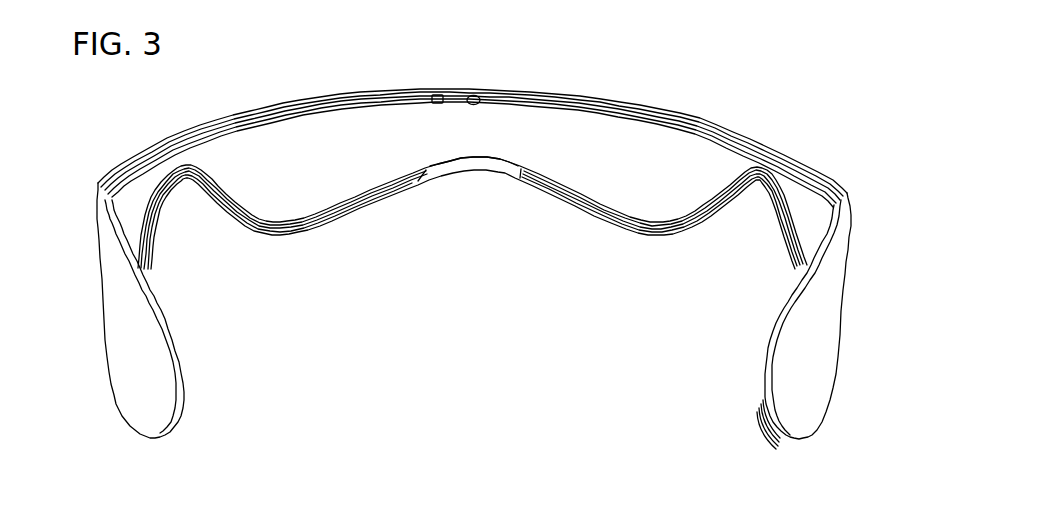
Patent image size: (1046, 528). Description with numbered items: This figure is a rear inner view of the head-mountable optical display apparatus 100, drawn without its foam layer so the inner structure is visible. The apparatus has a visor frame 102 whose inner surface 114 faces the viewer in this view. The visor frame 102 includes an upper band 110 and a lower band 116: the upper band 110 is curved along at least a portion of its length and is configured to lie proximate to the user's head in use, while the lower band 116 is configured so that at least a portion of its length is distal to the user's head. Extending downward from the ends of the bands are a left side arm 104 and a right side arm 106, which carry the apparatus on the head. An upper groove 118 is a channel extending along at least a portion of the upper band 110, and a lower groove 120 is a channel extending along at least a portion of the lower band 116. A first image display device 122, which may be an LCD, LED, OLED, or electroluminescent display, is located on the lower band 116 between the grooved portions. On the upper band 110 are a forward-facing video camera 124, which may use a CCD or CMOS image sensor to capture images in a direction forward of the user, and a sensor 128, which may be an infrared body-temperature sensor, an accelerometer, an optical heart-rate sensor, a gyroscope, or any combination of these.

The display apparatus 100 is at (158, 130).
The visor frame 102 is at (122, 402).
The left side arm 104 is at (150, 410).
The right side arm 106 is at (802, 420).
The upper band 110 is at (752, 128).
The inner surface 114 is at (452, 130).
The lower band 116 is at (323, 222).
The upper groove 118 is at (703, 122).
The lower groove 120 is at (390, 178).
The first image display device 122 is at (475, 165).
The forward-facing video camera 124 is at (473, 95).
The sensor 128 is at (434, 97).